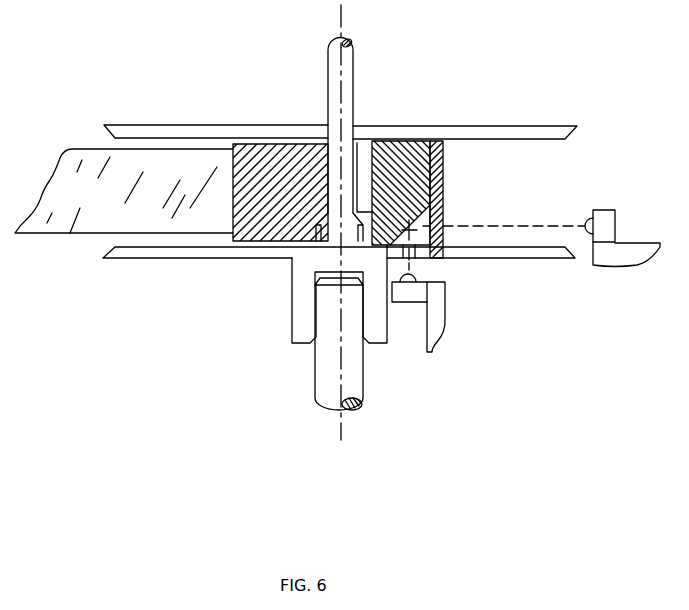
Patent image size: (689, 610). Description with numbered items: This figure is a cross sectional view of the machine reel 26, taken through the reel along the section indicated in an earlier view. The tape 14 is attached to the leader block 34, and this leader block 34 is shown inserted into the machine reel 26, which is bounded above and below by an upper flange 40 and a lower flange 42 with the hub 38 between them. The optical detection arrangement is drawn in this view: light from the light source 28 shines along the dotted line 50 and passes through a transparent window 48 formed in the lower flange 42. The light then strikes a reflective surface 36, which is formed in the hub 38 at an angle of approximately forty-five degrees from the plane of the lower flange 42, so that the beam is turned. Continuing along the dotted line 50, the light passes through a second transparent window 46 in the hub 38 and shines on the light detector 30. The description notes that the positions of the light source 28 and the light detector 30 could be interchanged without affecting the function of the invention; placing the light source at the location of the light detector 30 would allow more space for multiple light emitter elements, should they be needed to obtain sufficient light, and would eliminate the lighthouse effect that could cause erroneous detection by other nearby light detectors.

The tape 14 is at (70, 233).
The machine reel 26 is at (390, 98).
The light source 28 is at (447, 305).
The light detector 30 is at (605, 210).
The leader block 34 is at (266, 150).
The reflective surface 36 is at (412, 232).
The hub 38 is at (420, 178).
The upper guide plate 40 is at (160, 125).
The lower flange 42 is at (205, 260).
The transparent window 46 is at (445, 205).
The transparent window 48 is at (418, 256).
The dotted line 50 is at (505, 226).